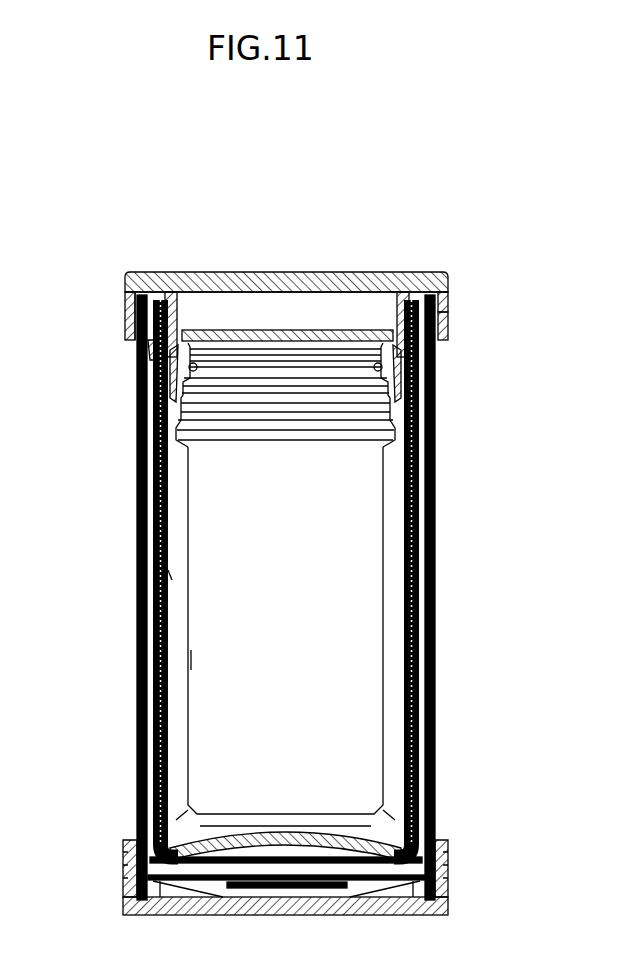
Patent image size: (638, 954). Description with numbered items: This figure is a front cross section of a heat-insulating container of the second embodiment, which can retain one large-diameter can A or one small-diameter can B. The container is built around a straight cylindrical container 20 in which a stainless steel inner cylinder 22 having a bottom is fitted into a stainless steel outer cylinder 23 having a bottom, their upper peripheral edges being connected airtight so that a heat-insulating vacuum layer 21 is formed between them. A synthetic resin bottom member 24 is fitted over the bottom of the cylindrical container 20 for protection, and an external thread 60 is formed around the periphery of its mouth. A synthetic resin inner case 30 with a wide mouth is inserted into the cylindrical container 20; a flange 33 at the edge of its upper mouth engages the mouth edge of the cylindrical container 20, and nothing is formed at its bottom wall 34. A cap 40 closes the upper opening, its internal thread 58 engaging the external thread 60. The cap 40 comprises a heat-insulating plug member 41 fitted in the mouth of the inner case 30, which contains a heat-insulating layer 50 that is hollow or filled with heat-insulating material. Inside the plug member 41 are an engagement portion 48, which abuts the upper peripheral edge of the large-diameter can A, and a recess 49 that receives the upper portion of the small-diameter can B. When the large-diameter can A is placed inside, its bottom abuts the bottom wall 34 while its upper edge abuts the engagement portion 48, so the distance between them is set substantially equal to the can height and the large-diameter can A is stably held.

The straight cylindrical container 20 is at (440, 582).
The heat-insulating vacuum layer 21 is at (423, 626).
The inner cylinder 22 is at (150, 537).
The outer cylinder 23 is at (137, 511).
The bottom member 24 is at (123, 883).
The inner case 30 is at (423, 681).
The flange 33 is at (427, 287).
The bottom wall 34 is at (223, 833).
The cap 40 is at (299, 268).
The heat-insulating plug member 41 is at (238, 278).
The engagement portion 48 is at (422, 407).
The recess 49 is at (422, 367).
The heat-insulating layer 50 is at (335, 302).
The internal thread 58 is at (140, 347).
The external thread 60 is at (448, 312).
The large-diameter can A is at (170, 576).
The small-diameter can B is at (193, 660).